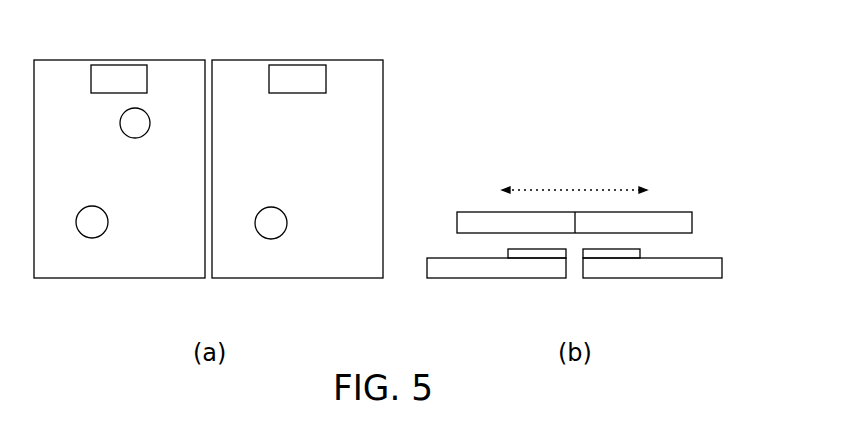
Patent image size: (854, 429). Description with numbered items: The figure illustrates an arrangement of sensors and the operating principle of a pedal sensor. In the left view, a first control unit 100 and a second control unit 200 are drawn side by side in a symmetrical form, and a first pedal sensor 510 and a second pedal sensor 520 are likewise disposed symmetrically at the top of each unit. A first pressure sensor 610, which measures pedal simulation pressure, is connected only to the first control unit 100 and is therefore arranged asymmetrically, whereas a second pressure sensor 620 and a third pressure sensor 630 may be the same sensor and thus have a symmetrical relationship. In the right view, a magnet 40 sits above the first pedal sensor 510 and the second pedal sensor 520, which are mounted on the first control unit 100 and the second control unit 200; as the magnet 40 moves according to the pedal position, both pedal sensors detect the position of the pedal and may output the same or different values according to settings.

The magnet 40 is at (470, 212).
The first control unit 100 is at (60, 60).
The second control unit 200 is at (237, 60).
The first pedal sensor 510 is at (121, 65).
The second pedal sensor 520 is at (299, 65).
The first pressure sensor 610 is at (92, 239).
The second pressure sensor 620 is at (147, 113).
The third pressure sensor 630 is at (271, 240).